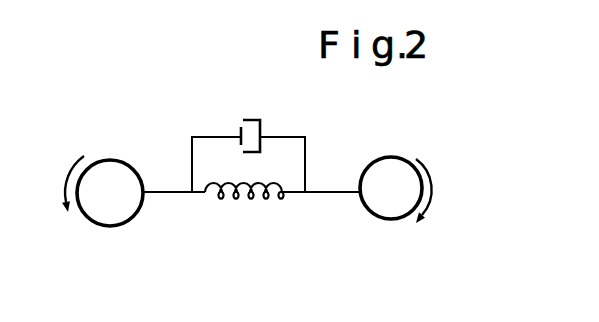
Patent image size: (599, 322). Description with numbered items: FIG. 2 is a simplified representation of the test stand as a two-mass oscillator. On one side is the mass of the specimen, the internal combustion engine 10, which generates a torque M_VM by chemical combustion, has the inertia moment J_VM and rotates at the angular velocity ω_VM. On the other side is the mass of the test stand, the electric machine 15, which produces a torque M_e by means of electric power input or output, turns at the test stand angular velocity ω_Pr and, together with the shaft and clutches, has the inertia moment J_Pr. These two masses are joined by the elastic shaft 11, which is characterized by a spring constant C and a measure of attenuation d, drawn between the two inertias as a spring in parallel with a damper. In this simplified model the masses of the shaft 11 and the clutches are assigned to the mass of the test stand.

The internal combustion engine 10 is at (365, 210).
The shaft 11 is at (222, 202).
The electric machine 15 is at (119, 161).